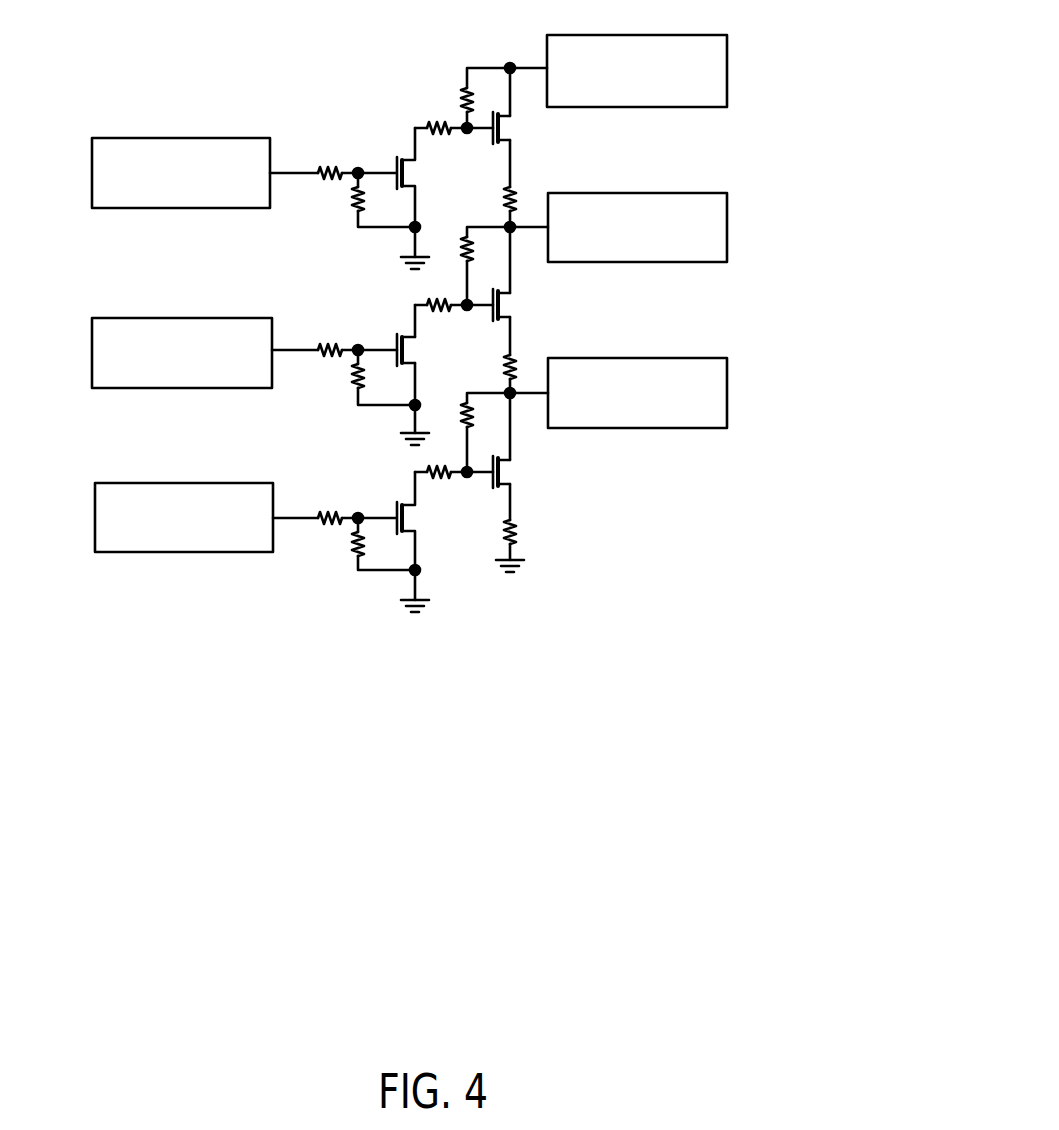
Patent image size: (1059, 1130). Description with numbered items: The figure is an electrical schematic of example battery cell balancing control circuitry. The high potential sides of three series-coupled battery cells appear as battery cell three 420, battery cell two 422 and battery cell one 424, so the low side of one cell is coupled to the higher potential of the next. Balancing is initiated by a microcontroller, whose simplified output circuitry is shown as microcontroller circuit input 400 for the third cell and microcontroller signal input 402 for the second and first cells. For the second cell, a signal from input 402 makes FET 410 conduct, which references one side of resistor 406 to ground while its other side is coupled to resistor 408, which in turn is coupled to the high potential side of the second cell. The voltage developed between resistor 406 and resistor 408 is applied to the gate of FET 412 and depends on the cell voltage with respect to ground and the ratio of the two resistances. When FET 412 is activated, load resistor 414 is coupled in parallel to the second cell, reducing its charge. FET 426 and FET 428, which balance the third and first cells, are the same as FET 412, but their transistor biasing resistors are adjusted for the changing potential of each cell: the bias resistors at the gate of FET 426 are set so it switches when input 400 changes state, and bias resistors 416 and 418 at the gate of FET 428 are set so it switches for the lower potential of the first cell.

The microcontroller circuit input 400 is at (99, 138).
The microcontroller signal input 402 is at (101, 318).
The resistor 406 is at (428, 303).
The resistor 408 is at (462, 248).
The FET 410 is at (397, 345).
The FET 412 is at (512, 293).
The load resistor 414 is at (518, 357).
The bias resistor 416 is at (462, 412).
The bias resistor 418 is at (428, 470).
The battery cell 3 420 is at (707, 35).
The battery cell 2 422 is at (707, 193).
The battery cell 1 424 is at (689, 428).
The FET 426 is at (505, 131).
The FET 428 is at (505, 476).